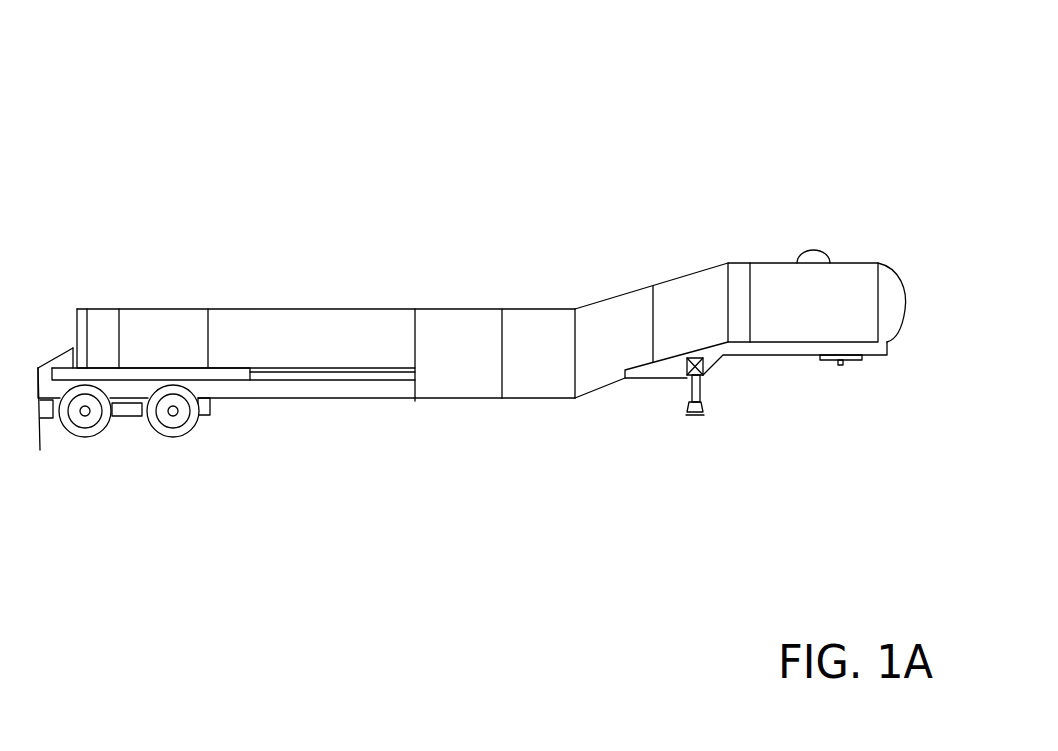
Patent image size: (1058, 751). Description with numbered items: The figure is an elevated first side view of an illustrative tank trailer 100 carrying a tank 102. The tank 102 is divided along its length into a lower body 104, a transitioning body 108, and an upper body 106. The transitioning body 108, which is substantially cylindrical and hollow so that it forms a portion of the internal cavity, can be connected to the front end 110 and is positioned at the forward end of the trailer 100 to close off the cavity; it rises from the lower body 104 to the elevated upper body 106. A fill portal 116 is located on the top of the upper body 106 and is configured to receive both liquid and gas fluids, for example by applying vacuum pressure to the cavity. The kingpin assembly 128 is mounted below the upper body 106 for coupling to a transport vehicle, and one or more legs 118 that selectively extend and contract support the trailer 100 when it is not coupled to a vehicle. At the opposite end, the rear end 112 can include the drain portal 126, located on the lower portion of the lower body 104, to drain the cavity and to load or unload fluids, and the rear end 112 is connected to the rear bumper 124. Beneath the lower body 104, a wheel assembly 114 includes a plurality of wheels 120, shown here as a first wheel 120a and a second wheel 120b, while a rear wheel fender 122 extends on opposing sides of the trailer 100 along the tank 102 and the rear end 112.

The tank trailer 100 is at (620, 105).
The tank 102 is at (302, 309).
The lower body 104 is at (177, 337).
The upper body 106 is at (776, 290).
The transitioning body 108 is at (623, 322).
The front end 110 is at (893, 340).
The rear end 112 is at (77, 309).
The wheel assembly 114 is at (205, 414).
The fill portal 116 is at (830, 258).
The legs 118 is at (689, 385).
The plurality of wheels 120 is at (234, 490).
The first wheel 120a is at (185, 430).
The second wheel 120b is at (102, 437).
The rear wheel fender 122 is at (383, 380).
The rear bumper 124 is at (40, 450).
The drain portal 126 is at (67, 353).
The kingpin assembly 128 is at (830, 365).